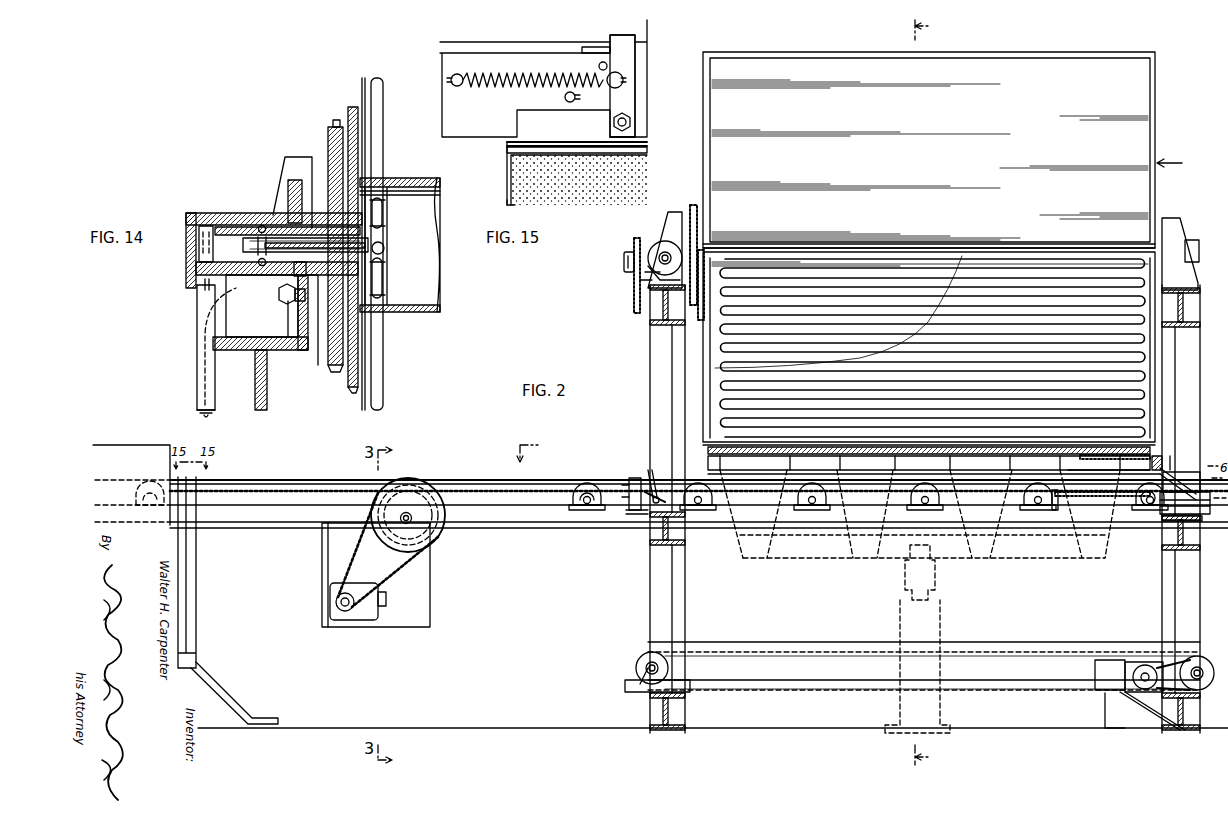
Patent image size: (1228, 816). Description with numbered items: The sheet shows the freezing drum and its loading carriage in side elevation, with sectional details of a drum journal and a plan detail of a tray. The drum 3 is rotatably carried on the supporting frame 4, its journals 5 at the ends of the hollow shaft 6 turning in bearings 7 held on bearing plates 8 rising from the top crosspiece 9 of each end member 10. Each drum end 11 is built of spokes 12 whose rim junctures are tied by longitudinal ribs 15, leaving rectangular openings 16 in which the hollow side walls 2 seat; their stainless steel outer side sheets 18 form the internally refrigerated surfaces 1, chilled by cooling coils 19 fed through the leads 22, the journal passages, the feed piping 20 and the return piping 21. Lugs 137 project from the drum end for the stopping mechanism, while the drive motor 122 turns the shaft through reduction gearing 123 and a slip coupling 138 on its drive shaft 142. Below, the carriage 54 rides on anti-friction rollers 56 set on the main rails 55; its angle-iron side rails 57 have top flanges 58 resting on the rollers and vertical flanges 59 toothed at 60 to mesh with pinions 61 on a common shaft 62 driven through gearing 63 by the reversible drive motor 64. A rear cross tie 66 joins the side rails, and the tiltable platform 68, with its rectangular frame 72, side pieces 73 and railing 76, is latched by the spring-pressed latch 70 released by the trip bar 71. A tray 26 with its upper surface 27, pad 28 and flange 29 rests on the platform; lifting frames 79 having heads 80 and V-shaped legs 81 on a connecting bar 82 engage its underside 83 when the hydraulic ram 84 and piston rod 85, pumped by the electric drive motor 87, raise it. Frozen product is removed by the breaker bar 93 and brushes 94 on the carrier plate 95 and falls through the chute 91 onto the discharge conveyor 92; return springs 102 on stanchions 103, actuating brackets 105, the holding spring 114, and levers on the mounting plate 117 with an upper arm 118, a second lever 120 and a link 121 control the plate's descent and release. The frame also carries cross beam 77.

In FIG. 2, the internally refrigerated surface 1 is at (941, 164).
In FIG. 2, the side wall 2 is at (1026, 164).
In FIG. 2, the drum 3 is at (1175, 163).
In FIG. 2, the supporting frame 4 is at (525, 444).
In FIG. 14, the journal 5 is at (218, 213).
In FIG. 2, the journal 5 is at (1199, 242).
In FIG. 14, the shaft 6 is at (232, 213).
In FIG. 2, the shaft 6 is at (926, 394).
In FIG. 14, the bearing 7 is at (248, 227).
In FIG. 14, the bearing plate 8 is at (284, 170).
In FIG. 2, the bearing plate 8 is at (1172, 222).
In FIG. 2, the top crosspiece 9 is at (1210, 318).
In FIG. 2, the end member 10 is at (1212, 375).
In FIG. 2, the drum end 11 is at (1155, 100).
In FIG. 14, the spoke 12 is at (361, 400).
In FIG. 2, the rib 15 is at (1025, 250).
In FIG. 2, the opening 16 is at (1148, 130).
In FIG. 2, the outer side sheet 18 is at (950, 250).
In FIG. 2, the cooling coil 19 is at (852, 260).
In FIG. 14, the feed piping 20 is at (200, 413).
In FIG. 14, the return piping 21 is at (197, 385).
In FIG. 14, the lead 22 is at (384, 382).
In FIG. 15, the tray 26 is at (501, 175).
In FIG. 2, the tray 26 is at (703, 455).
In FIG. 15, the upper surface 27 is at (560, 200).
In FIG. 15, the pad 28 is at (597, 184).
In FIG. 15, the peripheral flange 29 is at (505, 188).
In FIG. 2, the carriage 54 is at (284, 474).
In FIG. 2, the main rail 55 is at (712, 525).
In FIG. 2, the anti-friction roller 56 is at (140, 494).
In FIG. 2, the side rail 57 is at (460, 480).
In FIG. 2, the top flange 58 is at (496, 488).
In FIG. 2, the vertical flange 59 is at (498, 499).
In FIG. 2, the teeth 60 is at (520, 492).
In FIG. 2, the pinion 61 is at (436, 530).
In FIG. 2, the common shaft 62 is at (402, 524).
In FIG. 2, the drive gearing 63 is at (391, 582).
In FIG. 2, the reversible drive motor 64 is at (364, 583).
In FIG. 2, the rear cross tie 66 is at (637, 478).
In FIG. 2, the tiltable platform 68 is at (710, 476).
In FIG. 15, the spring-pressed latch 70 is at (507, 125).
In FIG. 15, the trip bar 71 is at (600, 43).
In FIG. 2, the trip bar 71 is at (198, 576).
In FIG. 15, the rectangular frame 72 is at (506, 148).
In FIG. 2, the side piece 73 is at (972, 462).
In FIG. 2, the railing 76 is at (858, 462).
In FIG. 2, the cross beam 77 is at (1200, 546).
In FIG. 2, the lifting frame 79 is at (870, 568).
In FIG. 2, the head 80 is at (1057, 465).
In FIG. 2, the V-shaped leg 81 is at (1005, 500).
In FIG. 2, the connecting bar 82 is at (1033, 562).
In FIG. 2, the underside 83 is at (925, 460).
In FIG. 2, the hydraulic ram 84 is at (940, 710).
In FIG. 2, the piston rod 85 is at (930, 585).
In FIG. 2, the electric drive motor 87 is at (1094, 666).
In FIG. 2, the chute 91 is at (1084, 605).
In FIG. 2, the discharge conveyor 92 is at (1008, 645).
In FIG. 2, the breaker bar 93 is at (1210, 460).
In FIG. 2, the brush 94 is at (1160, 456).
In FIG. 2, the carrier plate 95 is at (1174, 458).
In FIG. 2, the return spring 102 is at (1128, 460).
In FIG. 2, the stanchion 103 is at (1075, 477).
In FIG. 2, the actuating bracket 105 is at (1144, 485).
In FIG. 2, the holding spring 114 is at (1108, 496).
In FIG. 2, the mounting plate 117 is at (611, 499).
In FIG. 2, the upper arm 118 is at (652, 470).
In FIG. 2, the second lever 120 is at (628, 480).
In FIG. 2, the link 121 is at (636, 516).
In FIG. 2, the drive motor 122 is at (656, 245).
In FIG. 14, the reduction gearing 123 is at (331, 118).
In FIG. 2, the reduction gearing 123 is at (628, 246).
In FIG. 2, the lug 137 is at (703, 412).
In FIG. 2, the slip coupling 138 is at (628, 283).
In FIG. 2, the drive shaft 142 is at (624, 262).